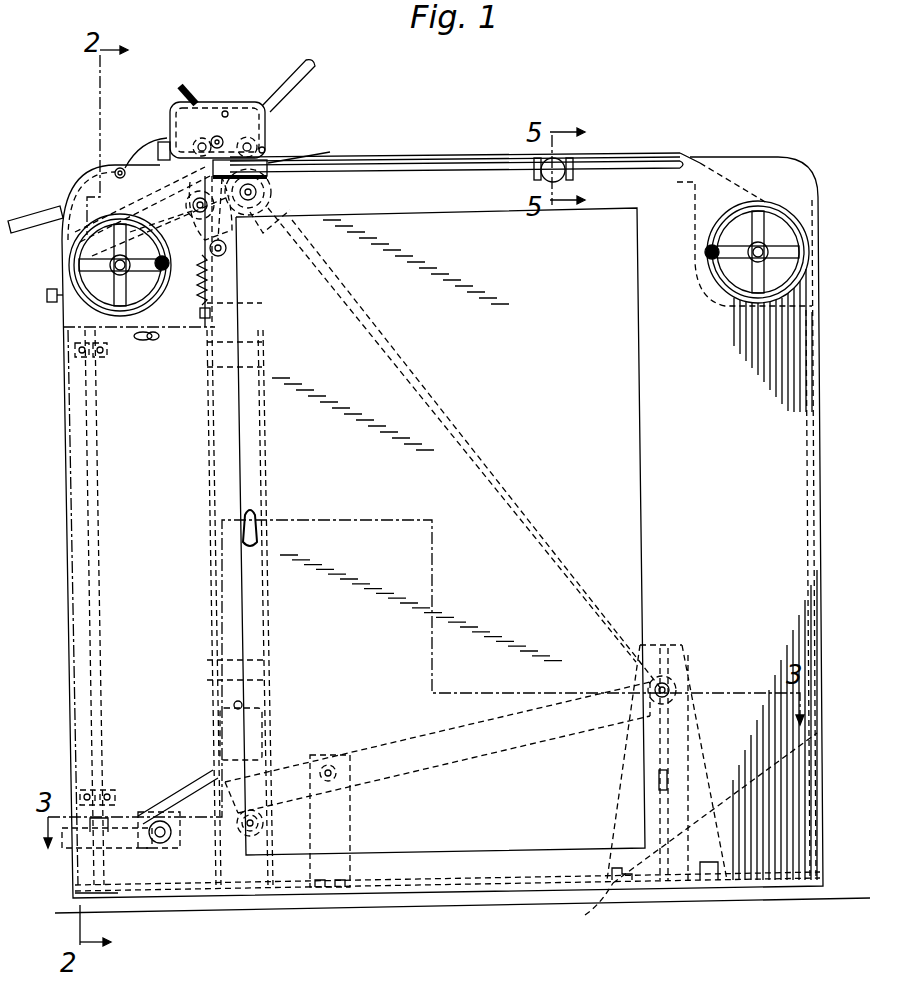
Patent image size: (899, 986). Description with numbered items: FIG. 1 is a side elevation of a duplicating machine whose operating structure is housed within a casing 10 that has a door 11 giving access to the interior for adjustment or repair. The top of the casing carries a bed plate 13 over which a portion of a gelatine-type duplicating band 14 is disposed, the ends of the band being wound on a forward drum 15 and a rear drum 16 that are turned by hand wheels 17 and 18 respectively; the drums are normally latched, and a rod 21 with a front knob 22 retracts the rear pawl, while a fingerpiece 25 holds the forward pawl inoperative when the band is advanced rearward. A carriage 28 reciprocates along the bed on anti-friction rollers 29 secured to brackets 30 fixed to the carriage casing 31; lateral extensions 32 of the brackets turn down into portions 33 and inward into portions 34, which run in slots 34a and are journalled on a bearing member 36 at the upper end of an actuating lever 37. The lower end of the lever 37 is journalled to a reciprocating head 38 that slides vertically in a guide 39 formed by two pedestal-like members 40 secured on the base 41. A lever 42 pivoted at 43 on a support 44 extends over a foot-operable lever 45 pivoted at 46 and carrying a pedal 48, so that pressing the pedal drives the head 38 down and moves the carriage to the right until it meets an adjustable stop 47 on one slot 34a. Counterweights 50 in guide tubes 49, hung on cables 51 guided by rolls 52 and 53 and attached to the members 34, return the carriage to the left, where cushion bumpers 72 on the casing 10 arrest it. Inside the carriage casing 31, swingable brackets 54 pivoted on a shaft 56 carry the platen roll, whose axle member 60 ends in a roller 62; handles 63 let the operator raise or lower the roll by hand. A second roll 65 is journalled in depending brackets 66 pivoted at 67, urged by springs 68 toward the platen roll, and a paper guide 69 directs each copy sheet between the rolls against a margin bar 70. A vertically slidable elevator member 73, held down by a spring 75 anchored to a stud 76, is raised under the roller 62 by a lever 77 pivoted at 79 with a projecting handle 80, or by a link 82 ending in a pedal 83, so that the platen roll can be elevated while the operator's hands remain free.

The casing 10 is at (722, 156).
The door 11 is at (618, 492).
The bed plate 13 is at (635, 153).
The duplicating band 14 is at (684, 152).
The drum 15 is at (100, 325).
The drum 16 is at (715, 305).
The hand wheel 17 is at (165, 320).
The hand wheel 18 is at (748, 300).
The rod 21 is at (62, 316).
The knob 22 is at (52, 290).
The fingerpiece 25 is at (146, 342).
The carriage 28 is at (232, 100).
The anti-friction rollers 29 is at (252, 126).
The brackets 30 is at (188, 120).
The carriage casing 31 is at (276, 95).
The lateral extensions 32 is at (266, 150).
The downward portions 33 is at (292, 163).
The inward portions 34 is at (211, 205).
The slots 34a is at (447, 163).
The bearing member 36 is at (264, 195).
The actuating lever 37 is at (476, 430).
The reciprocating head 38 is at (666, 640).
The guide 39 is at (702, 728).
The pedestal-like guide members 40 is at (625, 768).
The base 41 is at (686, 832).
The lever 42 is at (400, 742).
The pivot 43 is at (330, 765).
The support 44 is at (350, 812).
The foot-operable lever 45 is at (236, 840).
The pivot 46 is at (146, 814).
The adjustable stop 47 is at (560, 162).
The pedal 48 is at (105, 905).
The guide tubes 49 is at (262, 612).
The counterweights 50 is at (263, 718).
The cables 51 is at (206, 435).
The roll 52 is at (226, 255).
The roll 53 is at (185, 200).
The swingable brackets 54 is at (185, 112).
The shaft 56 is at (258, 140).
The axle member 60 is at (180, 132).
The roller 62 is at (178, 145).
The manually operable members 63 is at (178, 84).
The second roll 65 is at (240, 177).
The depending brackets 66 is at (242, 105).
The pivot 67 is at (239, 100).
The springs 68 is at (214, 110).
The paper guide 69 is at (306, 66).
The margin bar 70 is at (158, 158).
The cushion bumpers 72 is at (160, 150).
The elevator member 73 is at (228, 248).
The spring 75 is at (215, 285).
The stud 76 is at (200, 310).
The lever 77 is at (80, 188).
The pivot 79 is at (162, 219).
The handle 80 is at (52, 212).
The link 82 is at (70, 567).
The pedal 83 is at (72, 848).